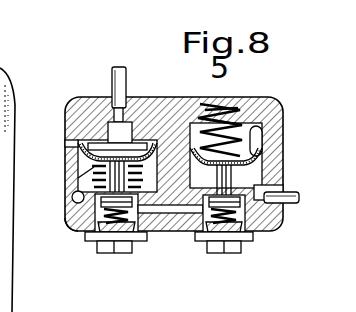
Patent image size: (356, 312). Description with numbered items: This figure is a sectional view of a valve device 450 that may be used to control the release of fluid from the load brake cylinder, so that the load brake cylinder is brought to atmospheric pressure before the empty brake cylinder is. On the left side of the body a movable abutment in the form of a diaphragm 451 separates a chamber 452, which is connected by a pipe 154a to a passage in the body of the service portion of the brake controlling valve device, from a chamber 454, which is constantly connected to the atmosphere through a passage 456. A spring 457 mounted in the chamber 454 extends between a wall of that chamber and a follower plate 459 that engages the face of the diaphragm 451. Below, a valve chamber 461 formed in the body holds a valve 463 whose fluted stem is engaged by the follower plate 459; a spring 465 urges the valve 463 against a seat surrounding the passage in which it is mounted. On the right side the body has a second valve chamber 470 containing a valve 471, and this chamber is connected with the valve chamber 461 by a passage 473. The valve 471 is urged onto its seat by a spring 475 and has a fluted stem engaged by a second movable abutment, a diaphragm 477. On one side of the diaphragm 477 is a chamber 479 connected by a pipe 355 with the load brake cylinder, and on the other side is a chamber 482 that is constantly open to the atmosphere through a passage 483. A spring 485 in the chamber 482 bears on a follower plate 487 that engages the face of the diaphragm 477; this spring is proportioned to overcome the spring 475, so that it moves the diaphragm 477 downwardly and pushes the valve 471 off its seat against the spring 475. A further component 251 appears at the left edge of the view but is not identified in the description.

The pipe 154a is at (113, 82).
The tank wall 251 is at (0, 177).
The pipe 355 is at (294, 203).
The valve device 450 is at (190, 96).
The diaphragm 451 is at (75, 141).
The chamber 452 is at (142, 142).
The chamber 454 is at (72, 198).
The passage 456 is at (66, 227).
The spring 457 is at (66, 146).
The follower plate 459 is at (80, 133).
The valve chamber 461 is at (89, 227).
The valve 463 is at (109, 222).
The spring 465 is at (133, 223).
The valve chamber 470 is at (182, 207).
The valve 471 is at (224, 227).
The passage 473 is at (167, 224).
The spring 475 is at (250, 236).
The diaphragm 477 is at (281, 121).
The chamber 479 is at (246, 170).
The chamber 482 is at (206, 117).
The passage 483 is at (283, 127).
The spring 485 is at (243, 102).
The follower plate 487 is at (210, 112).